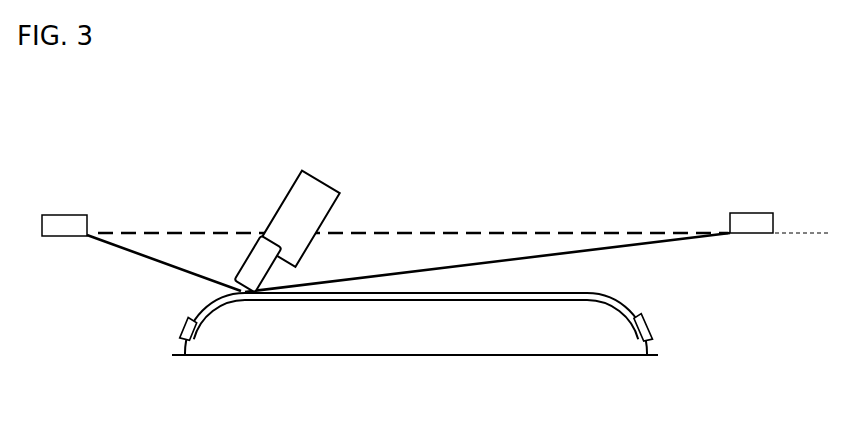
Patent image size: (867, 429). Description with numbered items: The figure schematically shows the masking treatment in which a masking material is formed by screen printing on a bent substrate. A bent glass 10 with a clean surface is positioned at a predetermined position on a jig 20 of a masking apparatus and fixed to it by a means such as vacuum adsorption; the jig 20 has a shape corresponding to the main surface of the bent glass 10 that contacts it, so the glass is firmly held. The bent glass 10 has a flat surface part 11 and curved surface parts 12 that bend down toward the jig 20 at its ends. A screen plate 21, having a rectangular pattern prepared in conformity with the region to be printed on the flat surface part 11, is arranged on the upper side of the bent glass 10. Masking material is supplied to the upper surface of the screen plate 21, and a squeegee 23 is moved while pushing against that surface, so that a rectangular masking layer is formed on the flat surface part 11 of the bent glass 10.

The bent glass 10 is at (619, 293).
The flat surface part 11 is at (521, 292).
The curved surface part 12 is at (189, 318).
The jig 20 is at (541, 341).
The screen plate 21 is at (578, 250).
The squeegee 23 is at (313, 194).